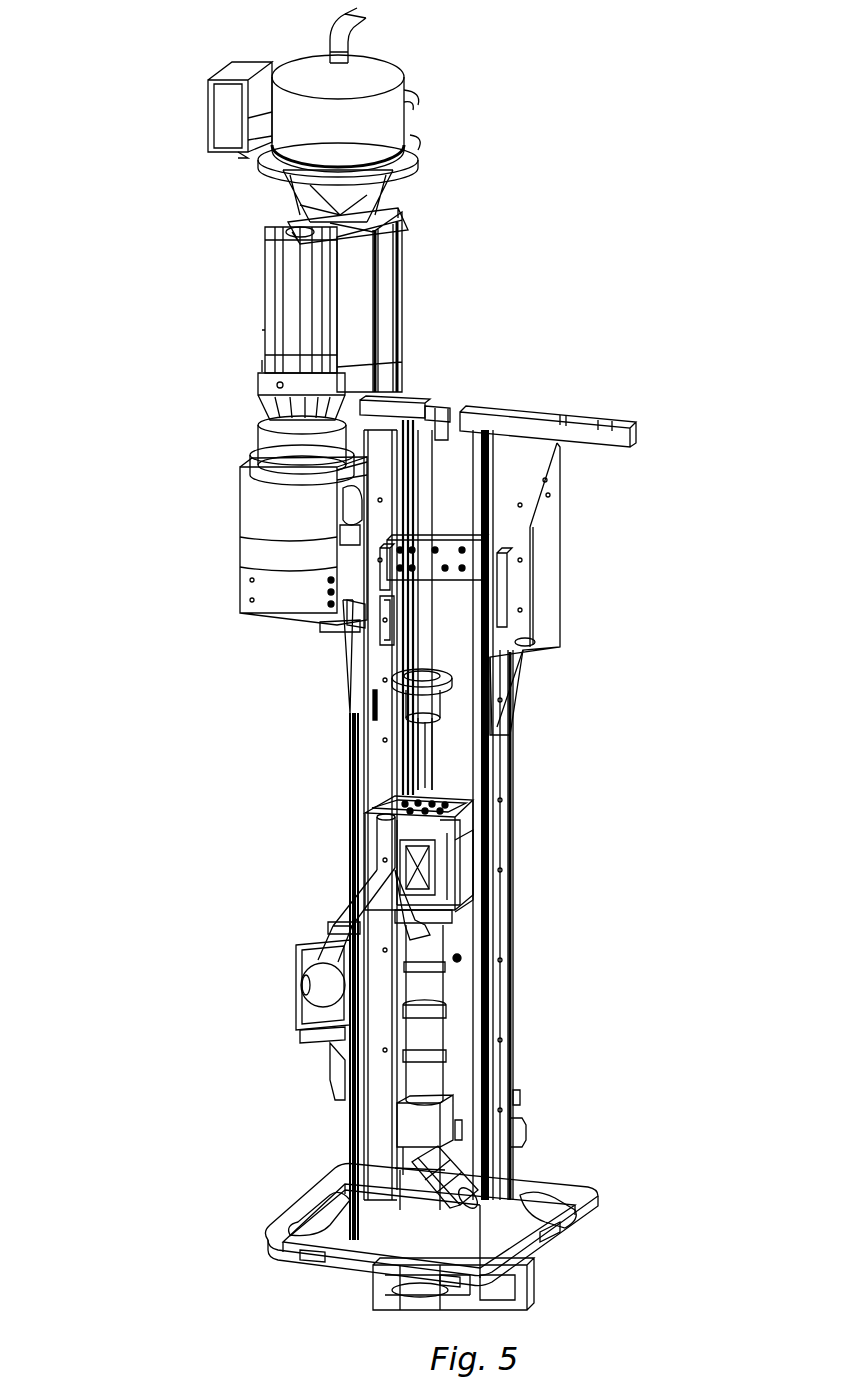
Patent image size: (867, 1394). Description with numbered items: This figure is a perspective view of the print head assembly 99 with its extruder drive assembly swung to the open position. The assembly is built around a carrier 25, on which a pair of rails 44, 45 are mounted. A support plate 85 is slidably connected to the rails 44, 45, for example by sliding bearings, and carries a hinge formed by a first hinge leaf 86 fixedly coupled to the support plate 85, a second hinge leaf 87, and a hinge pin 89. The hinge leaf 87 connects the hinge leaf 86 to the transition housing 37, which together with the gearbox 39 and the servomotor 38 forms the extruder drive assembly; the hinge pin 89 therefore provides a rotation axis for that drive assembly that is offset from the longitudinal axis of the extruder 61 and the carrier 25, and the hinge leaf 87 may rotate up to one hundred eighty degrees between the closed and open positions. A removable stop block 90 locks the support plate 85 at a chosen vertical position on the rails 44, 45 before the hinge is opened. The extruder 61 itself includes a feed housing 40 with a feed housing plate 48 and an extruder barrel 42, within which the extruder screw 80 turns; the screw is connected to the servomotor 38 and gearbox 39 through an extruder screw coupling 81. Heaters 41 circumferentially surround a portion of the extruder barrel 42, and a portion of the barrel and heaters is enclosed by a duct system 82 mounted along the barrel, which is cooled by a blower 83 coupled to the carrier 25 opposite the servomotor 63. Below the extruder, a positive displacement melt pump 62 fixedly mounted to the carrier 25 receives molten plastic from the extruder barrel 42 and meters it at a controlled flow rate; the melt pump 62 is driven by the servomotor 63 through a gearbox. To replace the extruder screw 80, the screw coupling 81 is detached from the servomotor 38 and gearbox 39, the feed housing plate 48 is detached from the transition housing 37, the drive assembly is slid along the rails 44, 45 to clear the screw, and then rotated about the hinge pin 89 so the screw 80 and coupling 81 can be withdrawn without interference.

The print head assembly 99 is at (135, 810).
The carrier 25 is at (565, 545).
The transition housing 37 is at (280, 590).
The servomotor 38 is at (290, 327).
The gearbox 39 is at (265, 385).
The feed housing 40 is at (447, 833).
The heaters 41 is at (440, 943).
The extruder barrel 42 is at (440, 1010).
The rail 44 is at (435, 440).
The rail 45 is at (500, 452).
The feed housing plate 48 is at (380, 800).
The extruder 61 is at (463, 902).
The melt pump 62 is at (545, 1240).
The servomotor 63 is at (395, 1160).
The extruder screw 80 is at (425, 775).
The extruder screw coupling 81 is at (440, 708).
The duct system 82 is at (455, 1108).
The blower 83 is at (527, 1133).
The support plate 85 is at (445, 570).
The hinge leaf 86 is at (392, 585).
The hinge leaf 87 is at (355, 615).
The hinge pin 89 is at (340, 528).
The stop block 90 is at (385, 640).